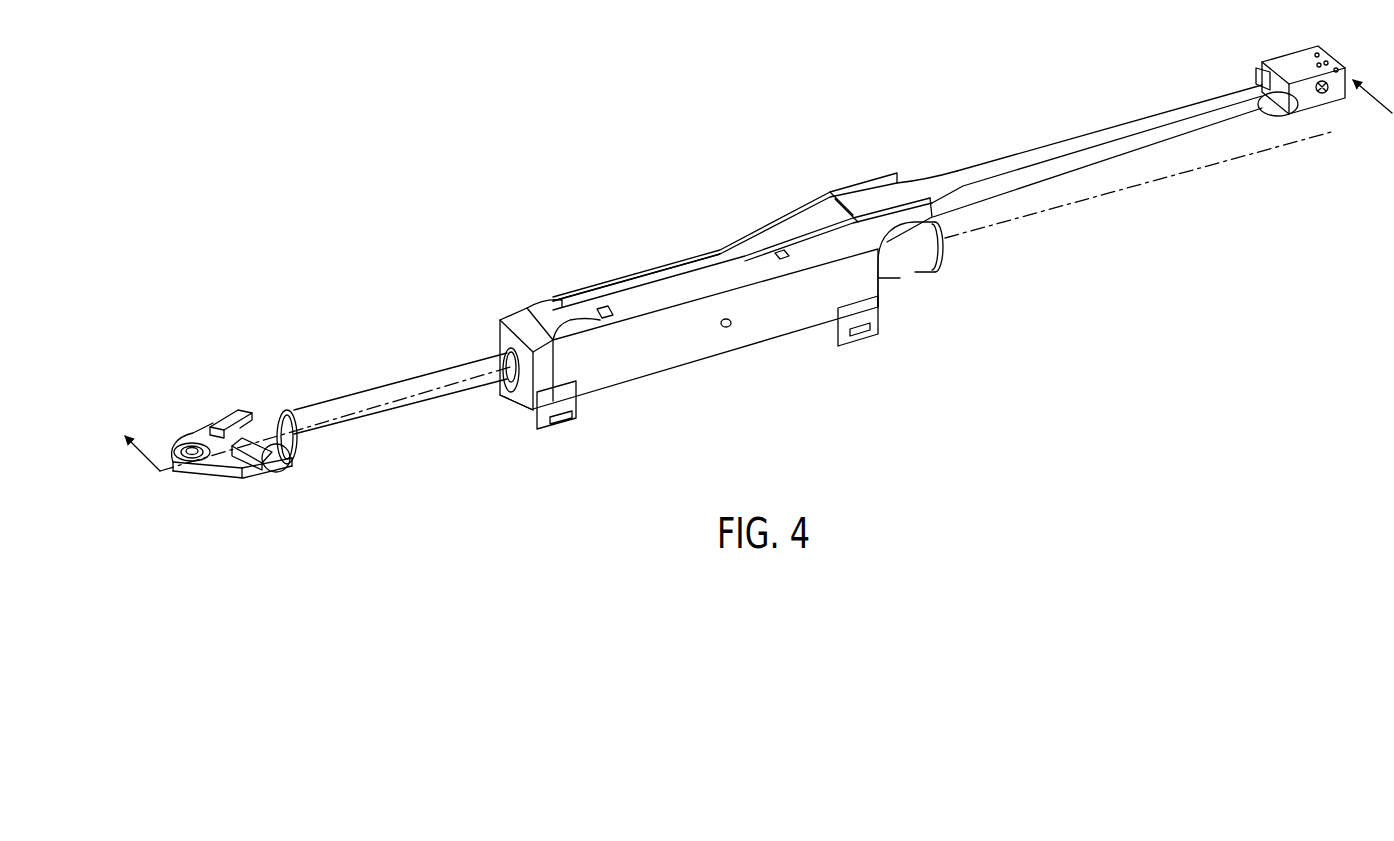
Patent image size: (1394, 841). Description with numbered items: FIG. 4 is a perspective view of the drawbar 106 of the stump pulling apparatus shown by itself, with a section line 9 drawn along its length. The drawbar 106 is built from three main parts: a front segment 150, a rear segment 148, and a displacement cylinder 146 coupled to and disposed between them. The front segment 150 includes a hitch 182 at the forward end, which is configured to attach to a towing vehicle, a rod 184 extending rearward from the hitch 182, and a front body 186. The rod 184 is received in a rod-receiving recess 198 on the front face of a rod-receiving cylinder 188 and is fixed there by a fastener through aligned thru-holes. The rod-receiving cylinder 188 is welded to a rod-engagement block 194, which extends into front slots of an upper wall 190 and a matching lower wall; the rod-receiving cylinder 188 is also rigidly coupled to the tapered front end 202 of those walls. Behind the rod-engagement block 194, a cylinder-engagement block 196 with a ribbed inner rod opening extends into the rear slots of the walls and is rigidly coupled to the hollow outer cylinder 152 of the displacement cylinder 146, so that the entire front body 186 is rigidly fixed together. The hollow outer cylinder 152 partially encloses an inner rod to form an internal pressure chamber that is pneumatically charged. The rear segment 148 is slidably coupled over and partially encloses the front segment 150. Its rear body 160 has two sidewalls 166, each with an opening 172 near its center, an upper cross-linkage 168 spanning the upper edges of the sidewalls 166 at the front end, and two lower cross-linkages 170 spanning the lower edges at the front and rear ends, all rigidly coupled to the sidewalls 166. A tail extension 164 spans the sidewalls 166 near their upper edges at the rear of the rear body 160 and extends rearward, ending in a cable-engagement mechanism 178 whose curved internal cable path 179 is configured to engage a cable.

The drawbar 106 is at (404, 114).
The section line 9 is at (748, 267).
The hitch 182 is at (198, 440).
The rod 184 is at (357, 402).
The rod-receiving recess 198 is at (506, 368).
The rod-receiving cylinder 188 is at (517, 343).
The upper cross-linkage 168 is at (518, 318).
The front segment 150 is at (497, 412).
The rear body 160 is at (645, 386).
The rod-engagement block 194 is at (570, 330).
The tapered front end 202 is at (582, 312).
The upper wall 190 is at (640, 302).
The sidewall 166 is at (763, 237).
The rear segment 148 is at (820, 190).
The front body 186 is at (603, 308).
The cylinder-engagement block 196 is at (778, 258).
The opening 172 is at (732, 330).
The lower cross-linkage 170 is at (521, 400).
The displacement cylinder 146 is at (903, 294).
The hollow outer cylinder 152 is at (925, 268).
The tail extension 164 is at (1118, 130).
The cable-engagement mechanism 178 is at (1298, 68).
The curved internal cable path 179 is at (1305, 96).